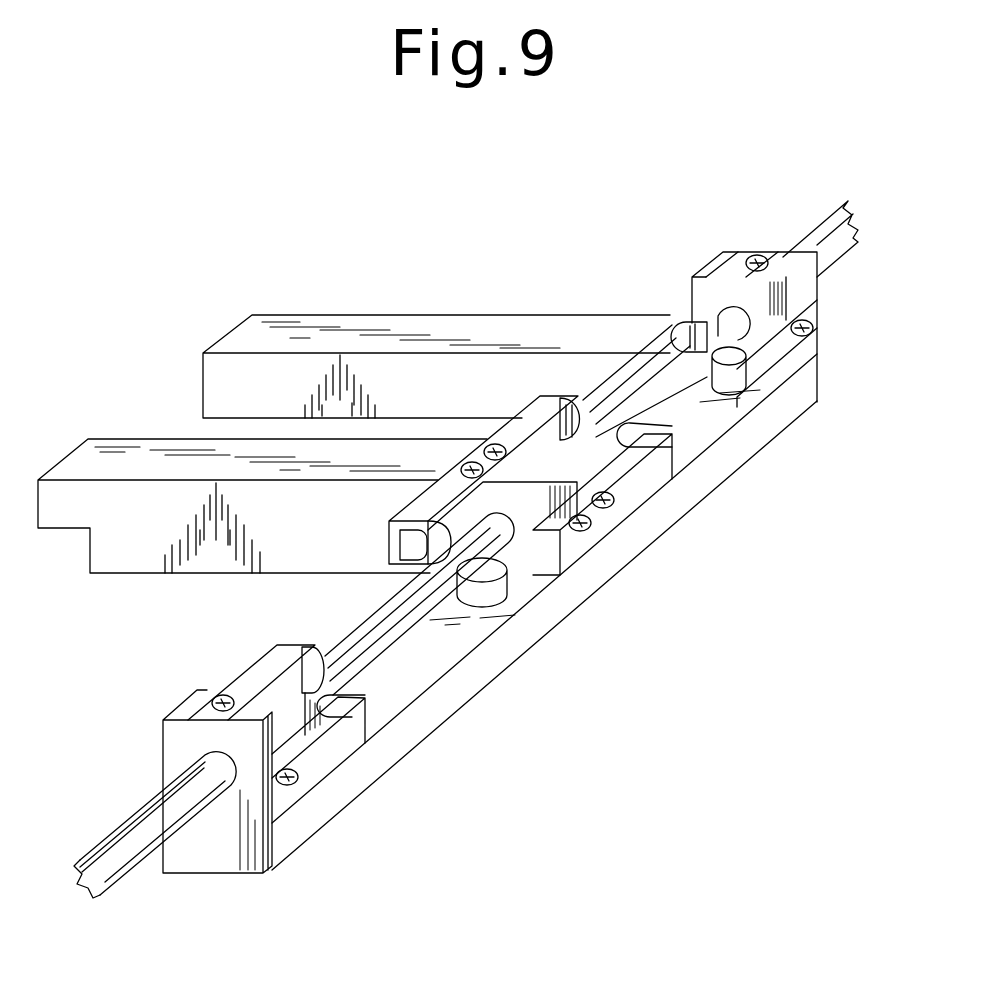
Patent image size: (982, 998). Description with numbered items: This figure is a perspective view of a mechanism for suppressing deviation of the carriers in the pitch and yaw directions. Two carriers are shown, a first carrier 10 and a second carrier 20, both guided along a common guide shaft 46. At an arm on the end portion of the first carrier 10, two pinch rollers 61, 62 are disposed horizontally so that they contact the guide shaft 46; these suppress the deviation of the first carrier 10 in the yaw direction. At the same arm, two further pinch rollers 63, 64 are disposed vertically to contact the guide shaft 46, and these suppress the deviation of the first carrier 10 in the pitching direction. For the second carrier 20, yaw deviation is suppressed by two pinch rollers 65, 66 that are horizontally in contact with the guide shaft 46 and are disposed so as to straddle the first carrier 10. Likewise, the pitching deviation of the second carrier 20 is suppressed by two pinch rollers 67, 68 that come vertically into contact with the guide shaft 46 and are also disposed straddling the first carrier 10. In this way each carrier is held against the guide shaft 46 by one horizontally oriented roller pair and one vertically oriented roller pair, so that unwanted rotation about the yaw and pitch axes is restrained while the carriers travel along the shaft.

The first carrier 10 is at (124, 437).
The second carrier 20 is at (298, 313).
The guide shaft 46 is at (408, 638).
The pinch roller 61 is at (532, 572).
The pinch roller 62 is at (658, 462).
The pinch roller 63 is at (386, 534).
The pinch roller 64 is at (530, 417).
The pinch roller 65 is at (335, 745).
The pinch roller 66 is at (763, 392).
The pinch roller 67 is at (243, 680).
The pinch roller 68 is at (697, 312).